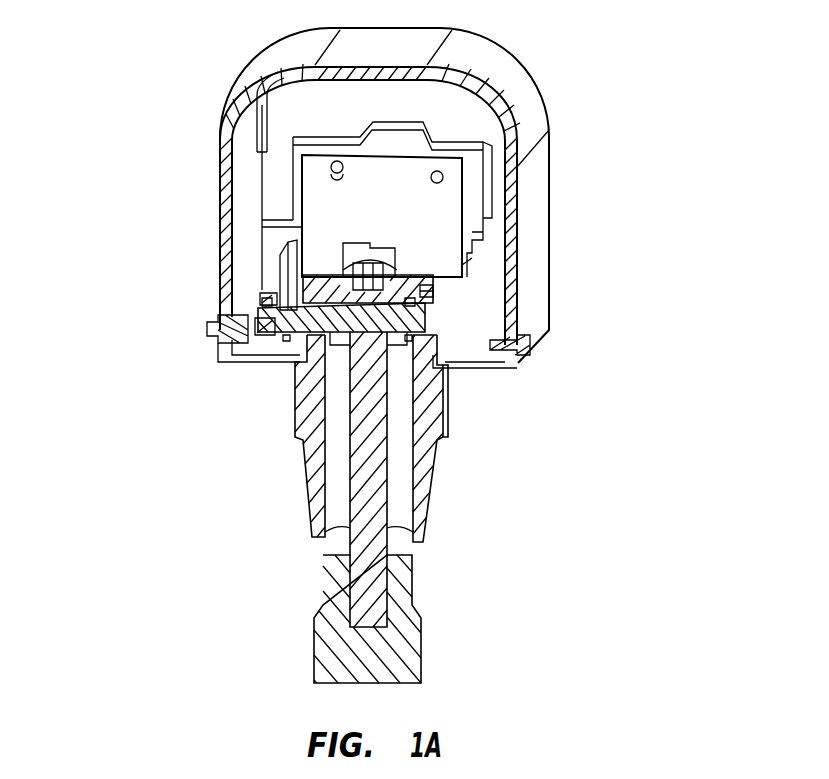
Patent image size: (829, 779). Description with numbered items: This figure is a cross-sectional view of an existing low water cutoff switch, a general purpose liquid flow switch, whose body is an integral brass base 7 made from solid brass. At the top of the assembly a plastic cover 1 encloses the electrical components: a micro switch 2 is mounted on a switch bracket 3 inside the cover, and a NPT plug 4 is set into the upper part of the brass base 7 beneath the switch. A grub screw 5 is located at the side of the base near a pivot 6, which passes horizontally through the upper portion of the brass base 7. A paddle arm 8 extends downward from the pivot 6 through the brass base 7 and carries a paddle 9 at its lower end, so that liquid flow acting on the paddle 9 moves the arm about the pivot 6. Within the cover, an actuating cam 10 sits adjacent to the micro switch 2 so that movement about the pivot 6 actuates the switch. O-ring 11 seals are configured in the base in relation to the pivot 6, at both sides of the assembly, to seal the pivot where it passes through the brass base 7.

The plastic cover 1 is at (512, 78).
The micro switch 2 is at (480, 190).
The switch bracket 3 is at (450, 226).
The NPT plug 4 is at (387, 270).
The grub screw 5 is at (432, 291).
The pivot 6 is at (432, 325).
The brass base 7 is at (430, 463).
The paddle arm 8 is at (372, 580).
The paddle 9 is at (421, 650).
The actuating cam 10 is at (277, 273).
The O-ring 11 is at (260, 328).